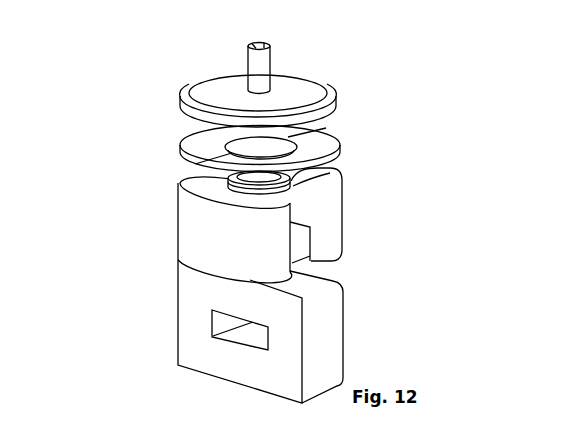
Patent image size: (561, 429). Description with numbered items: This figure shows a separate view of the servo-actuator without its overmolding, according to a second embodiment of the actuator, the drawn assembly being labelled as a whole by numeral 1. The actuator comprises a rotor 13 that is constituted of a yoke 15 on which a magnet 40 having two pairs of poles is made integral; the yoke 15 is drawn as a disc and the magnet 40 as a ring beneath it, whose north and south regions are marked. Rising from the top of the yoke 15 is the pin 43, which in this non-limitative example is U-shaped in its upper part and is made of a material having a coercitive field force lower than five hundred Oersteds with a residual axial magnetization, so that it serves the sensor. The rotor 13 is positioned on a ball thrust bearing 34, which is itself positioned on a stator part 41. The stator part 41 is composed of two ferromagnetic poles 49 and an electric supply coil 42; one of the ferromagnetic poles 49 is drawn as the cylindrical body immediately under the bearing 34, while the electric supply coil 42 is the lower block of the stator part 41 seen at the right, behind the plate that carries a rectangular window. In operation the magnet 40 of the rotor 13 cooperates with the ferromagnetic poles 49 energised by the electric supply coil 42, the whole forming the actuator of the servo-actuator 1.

The assembly 1 is at (414, 194).
The rotor 13 is at (161, 121).
The yoke 15 is at (329, 103).
The ball thrust bearing 34 is at (227, 183).
The magnet 40 is at (334, 146).
The stator part 41 is at (144, 261).
The electric supply coil 42 is at (335, 343).
The pin 43 is at (270, 63).
The ferromagnetic poles 49 is at (190, 231).